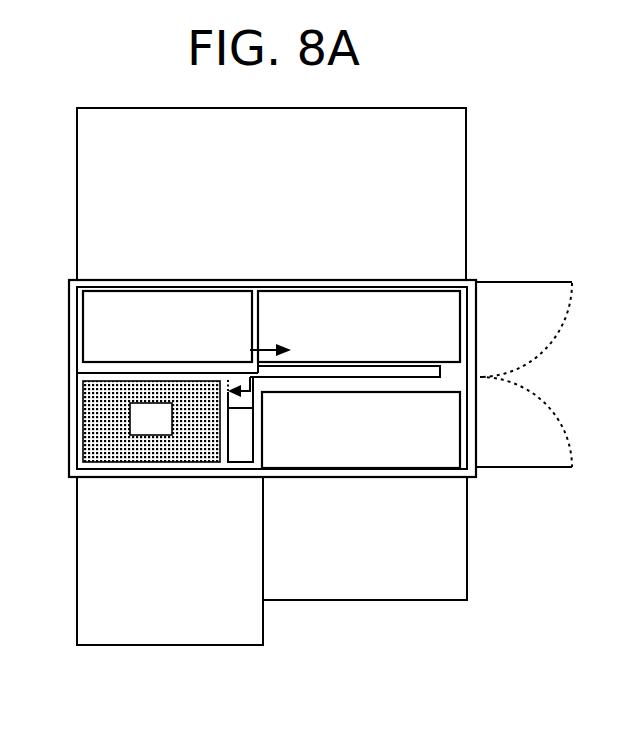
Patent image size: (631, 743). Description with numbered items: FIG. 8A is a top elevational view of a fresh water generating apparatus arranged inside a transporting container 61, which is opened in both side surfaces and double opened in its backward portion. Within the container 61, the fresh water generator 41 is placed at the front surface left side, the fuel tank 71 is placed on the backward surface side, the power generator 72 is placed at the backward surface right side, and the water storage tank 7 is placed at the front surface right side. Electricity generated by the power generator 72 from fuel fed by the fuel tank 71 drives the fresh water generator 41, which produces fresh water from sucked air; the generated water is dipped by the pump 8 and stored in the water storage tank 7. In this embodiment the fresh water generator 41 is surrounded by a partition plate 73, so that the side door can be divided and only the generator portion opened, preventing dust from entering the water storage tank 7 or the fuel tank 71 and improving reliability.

The transporting container 61 is at (437, 281).
The fuel tank 71 is at (100, 318).
The power generator 72 is at (438, 342).
The partition plate 73 is at (100, 366).
The fresh water generator 41 is at (100, 412).
The pump 8 is at (243, 451).
The water storage tank 7 is at (435, 455).